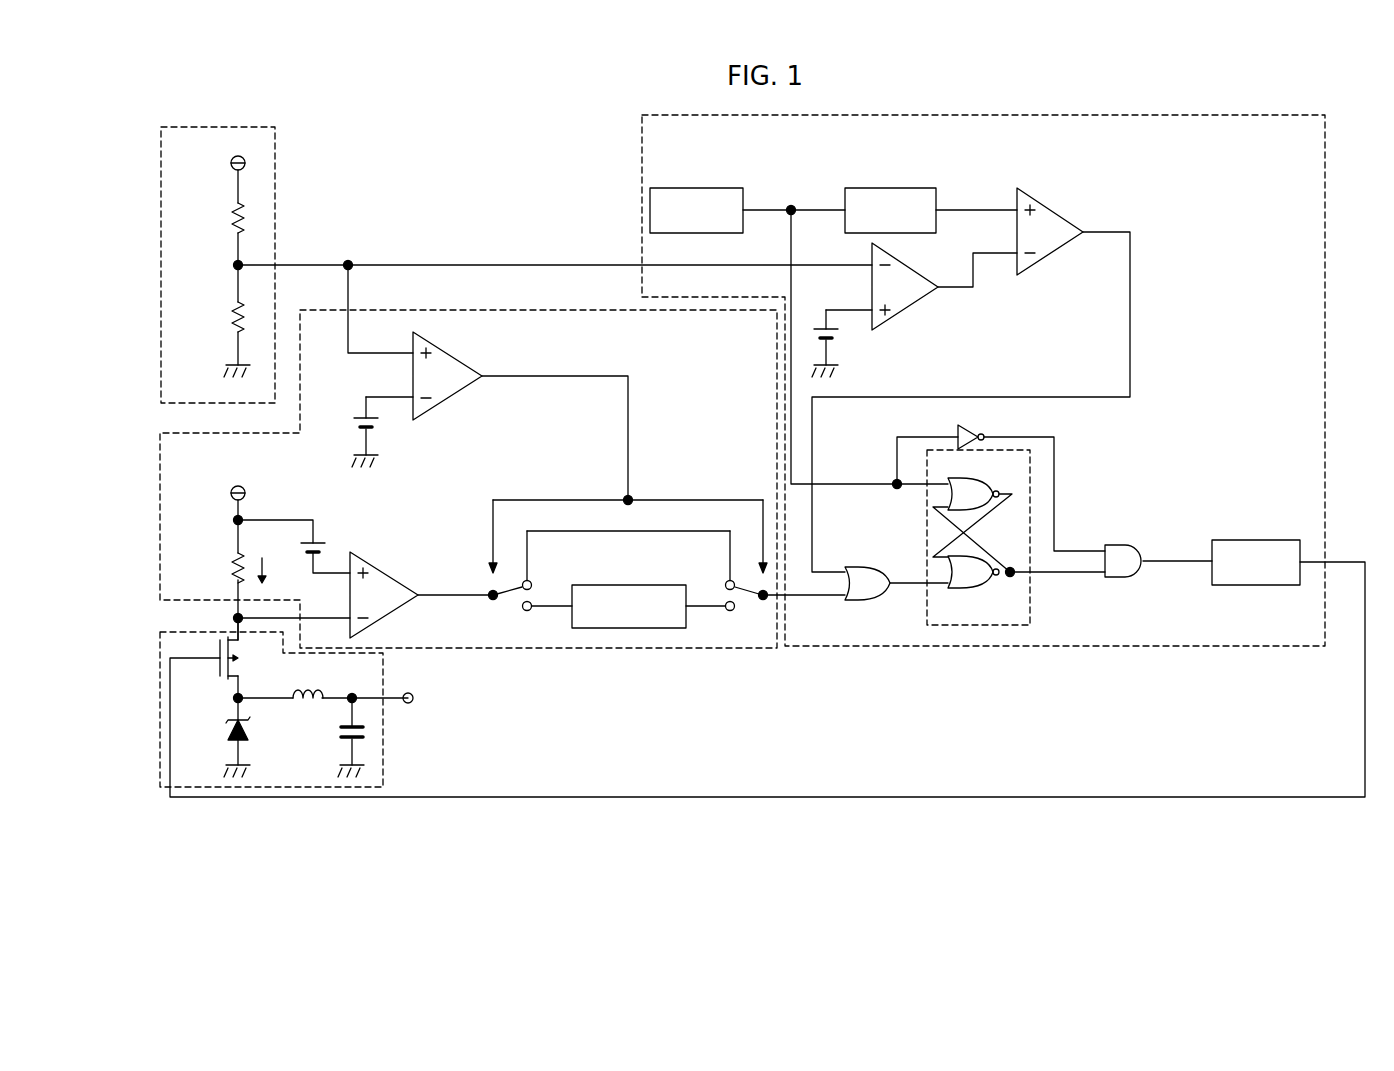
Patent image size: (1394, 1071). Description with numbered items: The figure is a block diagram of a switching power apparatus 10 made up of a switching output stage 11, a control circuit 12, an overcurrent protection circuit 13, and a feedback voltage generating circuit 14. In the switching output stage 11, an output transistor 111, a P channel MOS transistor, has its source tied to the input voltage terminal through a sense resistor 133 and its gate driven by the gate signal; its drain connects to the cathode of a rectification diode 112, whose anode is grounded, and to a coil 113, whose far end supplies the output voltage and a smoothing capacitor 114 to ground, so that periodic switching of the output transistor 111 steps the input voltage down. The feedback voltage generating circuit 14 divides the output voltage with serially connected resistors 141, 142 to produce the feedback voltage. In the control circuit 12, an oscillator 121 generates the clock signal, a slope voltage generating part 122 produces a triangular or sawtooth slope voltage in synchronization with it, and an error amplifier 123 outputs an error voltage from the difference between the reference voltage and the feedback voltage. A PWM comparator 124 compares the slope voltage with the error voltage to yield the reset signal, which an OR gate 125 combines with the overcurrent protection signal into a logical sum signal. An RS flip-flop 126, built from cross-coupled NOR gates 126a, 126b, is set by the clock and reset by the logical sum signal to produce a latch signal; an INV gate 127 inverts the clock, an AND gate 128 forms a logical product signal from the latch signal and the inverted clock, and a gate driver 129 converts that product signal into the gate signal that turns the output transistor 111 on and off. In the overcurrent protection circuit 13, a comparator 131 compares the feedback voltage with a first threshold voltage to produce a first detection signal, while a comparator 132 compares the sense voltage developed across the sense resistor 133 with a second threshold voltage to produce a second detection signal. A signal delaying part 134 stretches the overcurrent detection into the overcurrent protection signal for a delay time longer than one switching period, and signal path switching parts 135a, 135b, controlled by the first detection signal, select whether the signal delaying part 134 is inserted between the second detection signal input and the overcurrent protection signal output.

The switching power apparatus 10 is at (484, 180).
The switching output stage 11 is at (384, 751).
The control circuit 12 is at (643, 193).
The overcurrent protection circuit 13 is at (492, 309).
The feedback voltage generating circuit 14 is at (276, 187).
The output transistor 111 is at (246, 664).
The rectification diode 112 is at (235, 733).
The coil 113 is at (306, 688).
The smoothing capacitor 114 is at (347, 735).
The oscillator 121 is at (697, 188).
The slope voltage generating part 122 is at (890, 188).
The error amplifier 123 is at (906, 315).
The PWM comparator 124 is at (1049, 211).
The OR gate 125 is at (862, 568).
The RS flip-flop 126 is at (927, 515).
The NOR gate 126a is at (967, 478).
The NOR gate 126b is at (967, 590).
The INV gate 127 is at (963, 425).
The AND gate 128 is at (1122, 544).
The gate driver 129 is at (1256, 539).
The comparator 131 is at (442, 405).
The comparator 132 is at (386, 574).
The sense resistor 133 is at (235, 568).
The signal delaying part 134 is at (630, 585).
The signal path switching part 135a is at (539, 587).
The signal path switching part 135b is at (722, 587).
The resistor 141 is at (227, 217).
The resistor 142 is at (227, 313).